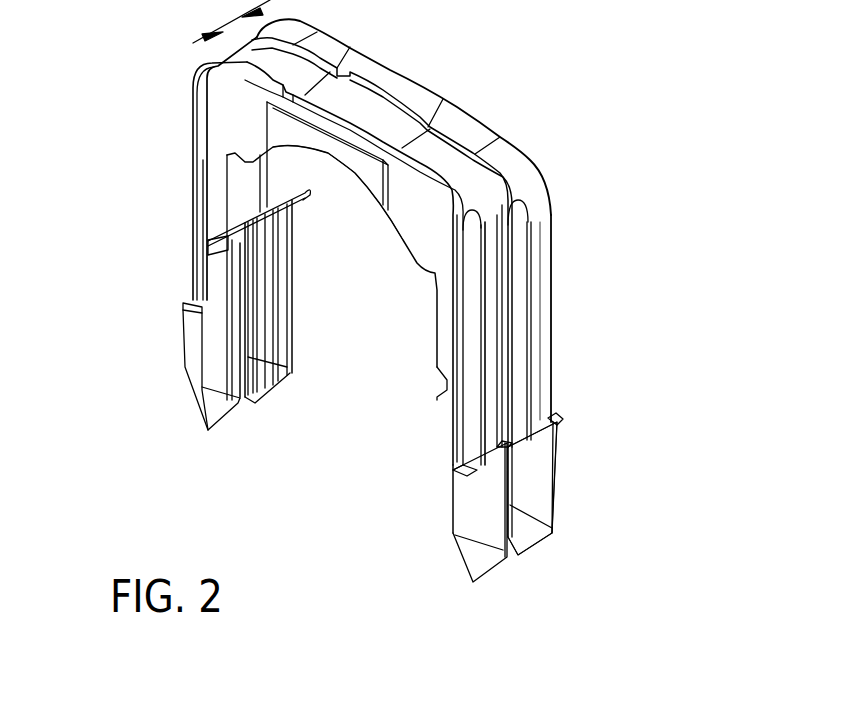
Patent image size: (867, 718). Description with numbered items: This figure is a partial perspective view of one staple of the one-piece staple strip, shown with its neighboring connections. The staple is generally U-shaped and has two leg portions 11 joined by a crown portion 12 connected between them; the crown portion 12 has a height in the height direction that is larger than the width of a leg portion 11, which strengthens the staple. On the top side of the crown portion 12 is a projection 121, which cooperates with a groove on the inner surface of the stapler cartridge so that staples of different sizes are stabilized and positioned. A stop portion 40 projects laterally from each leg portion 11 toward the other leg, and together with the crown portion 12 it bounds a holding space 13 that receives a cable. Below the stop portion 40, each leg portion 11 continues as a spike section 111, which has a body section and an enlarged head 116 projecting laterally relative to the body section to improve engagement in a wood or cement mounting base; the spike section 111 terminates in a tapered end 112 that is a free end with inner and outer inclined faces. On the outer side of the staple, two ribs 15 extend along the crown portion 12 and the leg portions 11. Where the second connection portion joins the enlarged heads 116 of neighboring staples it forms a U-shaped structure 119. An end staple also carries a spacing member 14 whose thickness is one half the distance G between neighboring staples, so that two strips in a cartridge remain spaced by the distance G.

The leg portion 11 is at (604, 257).
The crown portion 12 is at (530, 113).
The projection 121 is at (410, 81).
The holding space 13 is at (340, 283).
The spacing member 14 is at (278, 128).
The rib 15 is at (543, 321).
The stop portion 40 is at (440, 410).
The spike section 111 is at (162, 263).
The tapered end 112 is at (517, 601).
The enlarged head 116 is at (545, 472).
The U-shaped structure 119 is at (518, 417).
The distance G is at (257, 37).